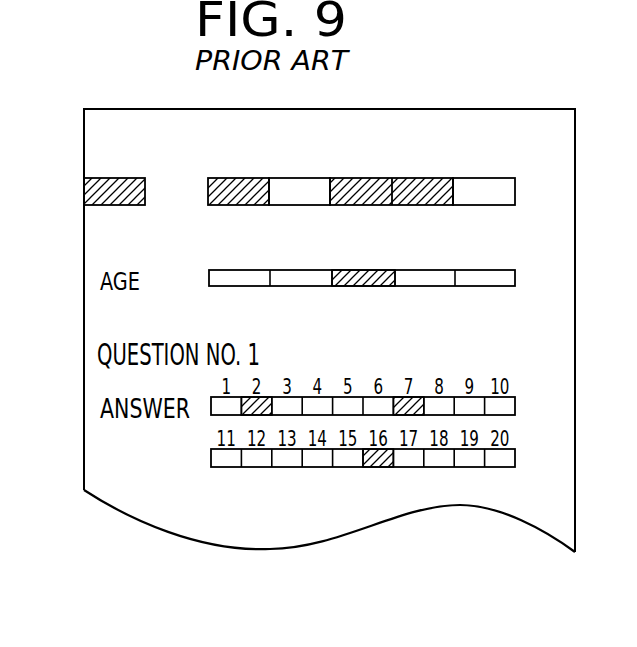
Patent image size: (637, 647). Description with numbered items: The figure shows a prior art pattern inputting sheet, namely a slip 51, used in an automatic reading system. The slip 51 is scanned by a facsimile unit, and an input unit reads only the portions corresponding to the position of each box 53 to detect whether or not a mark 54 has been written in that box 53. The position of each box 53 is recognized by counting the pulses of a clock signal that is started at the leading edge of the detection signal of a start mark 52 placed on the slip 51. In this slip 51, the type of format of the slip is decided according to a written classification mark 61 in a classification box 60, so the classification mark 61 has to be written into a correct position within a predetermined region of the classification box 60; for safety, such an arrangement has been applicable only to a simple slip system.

The slip 51 is at (546, 129).
The start mark 52 is at (110, 178).
The box 53 is at (515, 278).
The mark 54 is at (366, 272).
The classification box 60 is at (302, 185).
The classification mark 61 is at (233, 178).